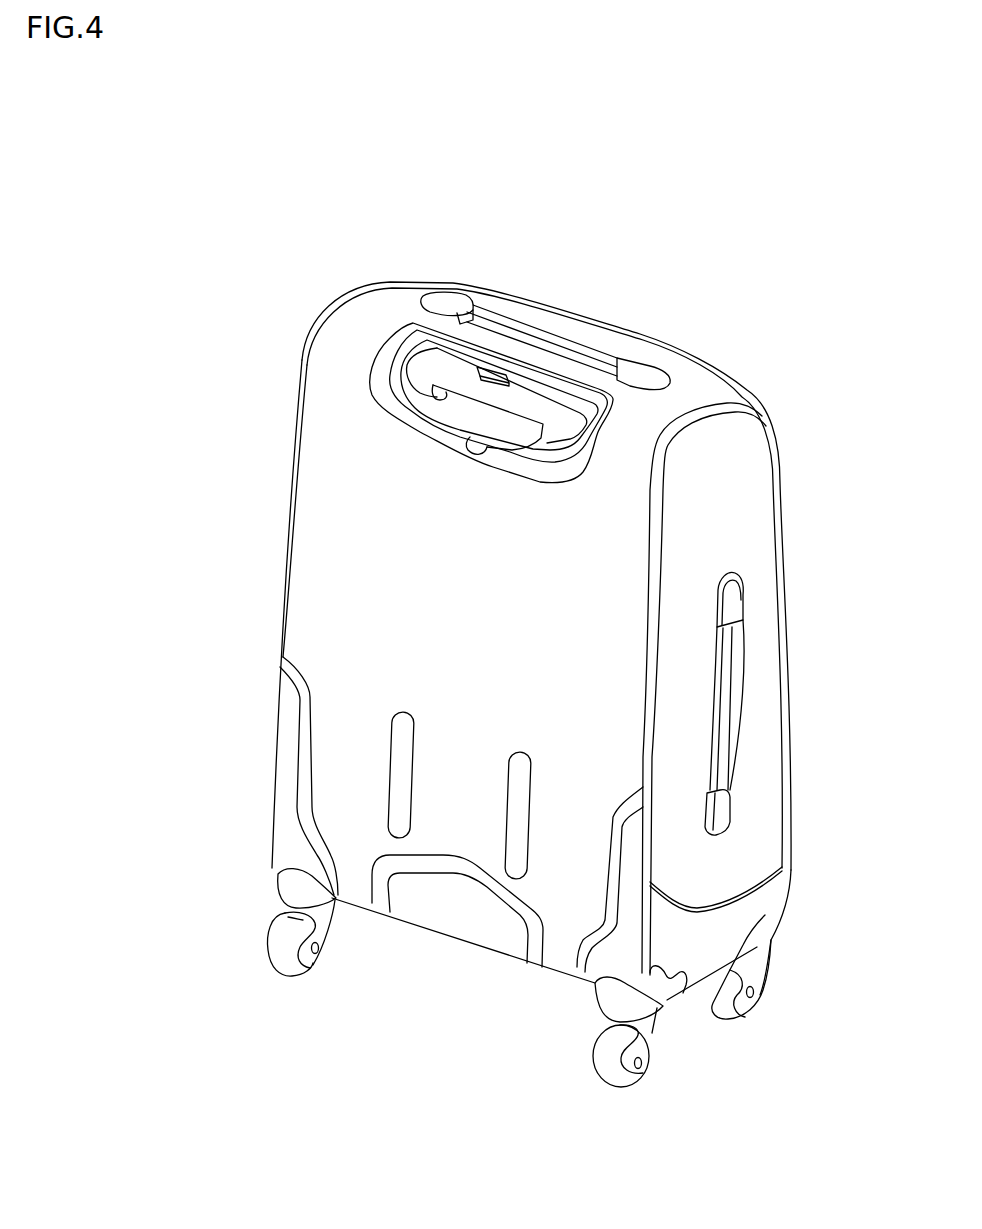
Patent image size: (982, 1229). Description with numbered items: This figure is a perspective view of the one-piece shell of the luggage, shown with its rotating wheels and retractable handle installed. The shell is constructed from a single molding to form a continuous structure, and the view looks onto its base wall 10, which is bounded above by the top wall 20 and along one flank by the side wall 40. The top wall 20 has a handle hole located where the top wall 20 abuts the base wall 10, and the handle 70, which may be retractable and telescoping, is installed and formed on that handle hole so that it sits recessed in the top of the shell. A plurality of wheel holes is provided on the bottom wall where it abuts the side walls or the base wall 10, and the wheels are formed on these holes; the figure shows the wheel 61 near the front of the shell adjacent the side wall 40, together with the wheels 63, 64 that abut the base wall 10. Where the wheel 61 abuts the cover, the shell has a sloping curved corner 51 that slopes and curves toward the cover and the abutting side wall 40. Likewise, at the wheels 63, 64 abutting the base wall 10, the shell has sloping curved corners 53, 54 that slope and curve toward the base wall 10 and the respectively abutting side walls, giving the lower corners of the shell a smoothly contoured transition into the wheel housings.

The base wall 10 is at (333, 585).
The top wall 20 is at (520, 322).
The handle 70 is at (533, 393).
The side wall 40 is at (760, 522).
The sloping curved corner 51 is at (786, 916).
The sloping curved corner 53 is at (667, 1005).
The sloping curved corner 54 is at (282, 848).
The wheel 61 is at (727, 1010).
The wheel 63 is at (604, 1072).
The wheel 64 is at (280, 946).